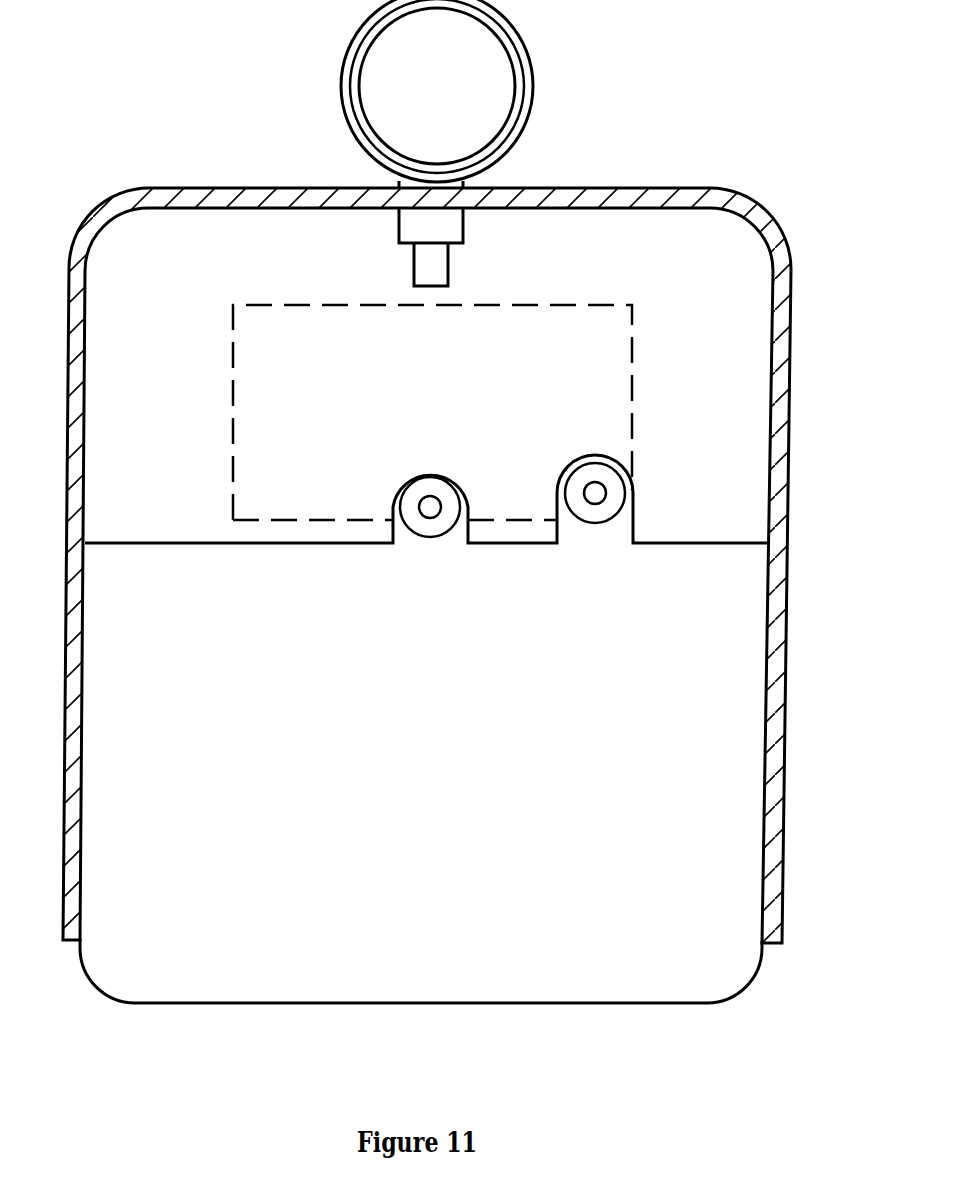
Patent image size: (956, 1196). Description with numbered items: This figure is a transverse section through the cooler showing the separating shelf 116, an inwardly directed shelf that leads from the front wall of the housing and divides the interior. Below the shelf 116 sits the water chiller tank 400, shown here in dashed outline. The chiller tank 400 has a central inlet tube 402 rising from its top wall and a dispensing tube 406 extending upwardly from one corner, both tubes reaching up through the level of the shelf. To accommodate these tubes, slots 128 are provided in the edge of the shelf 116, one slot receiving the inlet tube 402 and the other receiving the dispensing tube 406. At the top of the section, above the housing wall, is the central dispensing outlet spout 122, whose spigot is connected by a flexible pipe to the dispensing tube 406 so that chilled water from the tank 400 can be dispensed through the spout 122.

The dispensing outlet spout 122 is at (502, 82).
The water chiller tank 400 is at (230, 420).
The central inlet tube 402 is at (420, 487).
The dispensing tube 406 is at (603, 472).
The slots 128 is at (445, 472).
The shelf 116 is at (157, 515).